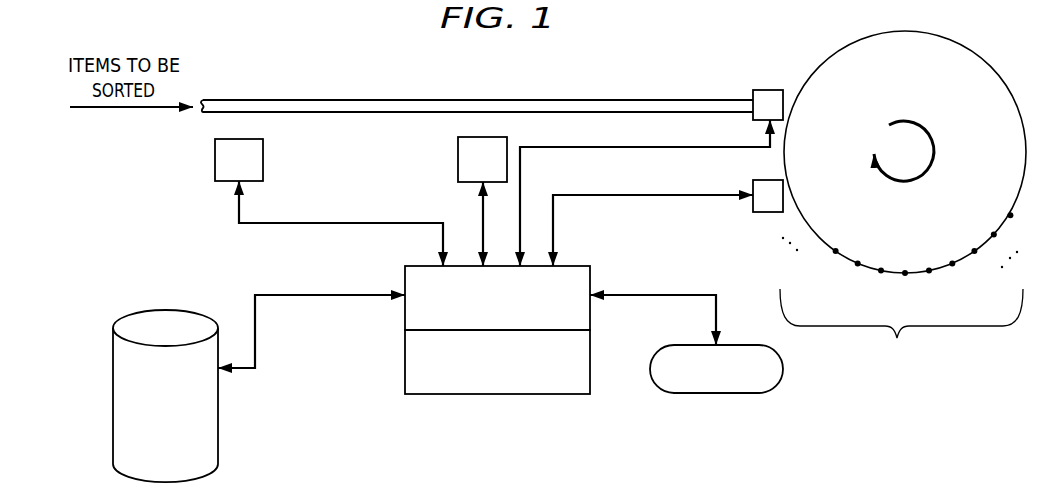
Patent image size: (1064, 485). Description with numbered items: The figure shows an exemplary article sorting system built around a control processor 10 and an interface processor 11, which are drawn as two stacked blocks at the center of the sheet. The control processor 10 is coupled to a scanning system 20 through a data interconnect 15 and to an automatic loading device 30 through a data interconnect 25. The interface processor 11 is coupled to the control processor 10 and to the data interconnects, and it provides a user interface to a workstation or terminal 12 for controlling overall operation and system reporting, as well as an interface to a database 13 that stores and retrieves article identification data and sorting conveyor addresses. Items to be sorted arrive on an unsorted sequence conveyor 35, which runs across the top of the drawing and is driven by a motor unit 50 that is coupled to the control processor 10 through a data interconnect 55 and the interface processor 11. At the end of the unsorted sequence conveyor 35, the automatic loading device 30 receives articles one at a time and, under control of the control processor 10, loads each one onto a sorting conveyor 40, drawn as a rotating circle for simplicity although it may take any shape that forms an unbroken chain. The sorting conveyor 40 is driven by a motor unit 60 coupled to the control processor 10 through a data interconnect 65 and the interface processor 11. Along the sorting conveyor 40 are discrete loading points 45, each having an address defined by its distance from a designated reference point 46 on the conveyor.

The control processor 10 is at (537, 394).
The interface processor 11 is at (405, 280).
The terminal 12 is at (740, 395).
The database 13 is at (218, 420).
The data interconnect 15 is at (481, 223).
The scanning system 20 is at (458, 156).
The data interconnect 25 is at (695, 148).
The automatic loading device 30 is at (766, 90).
The unsorted sequence conveyor 35 is at (387, 100).
The sorting conveyor 40 is at (1007, 84).
The loading points 45 is at (901, 315).
The reference point 46 is at (912, 307).
The motor unit 50 is at (215, 157).
The data interconnect 55 is at (345, 222).
The motor unit 60 is at (755, 207).
The data interconnect 65 is at (642, 197).